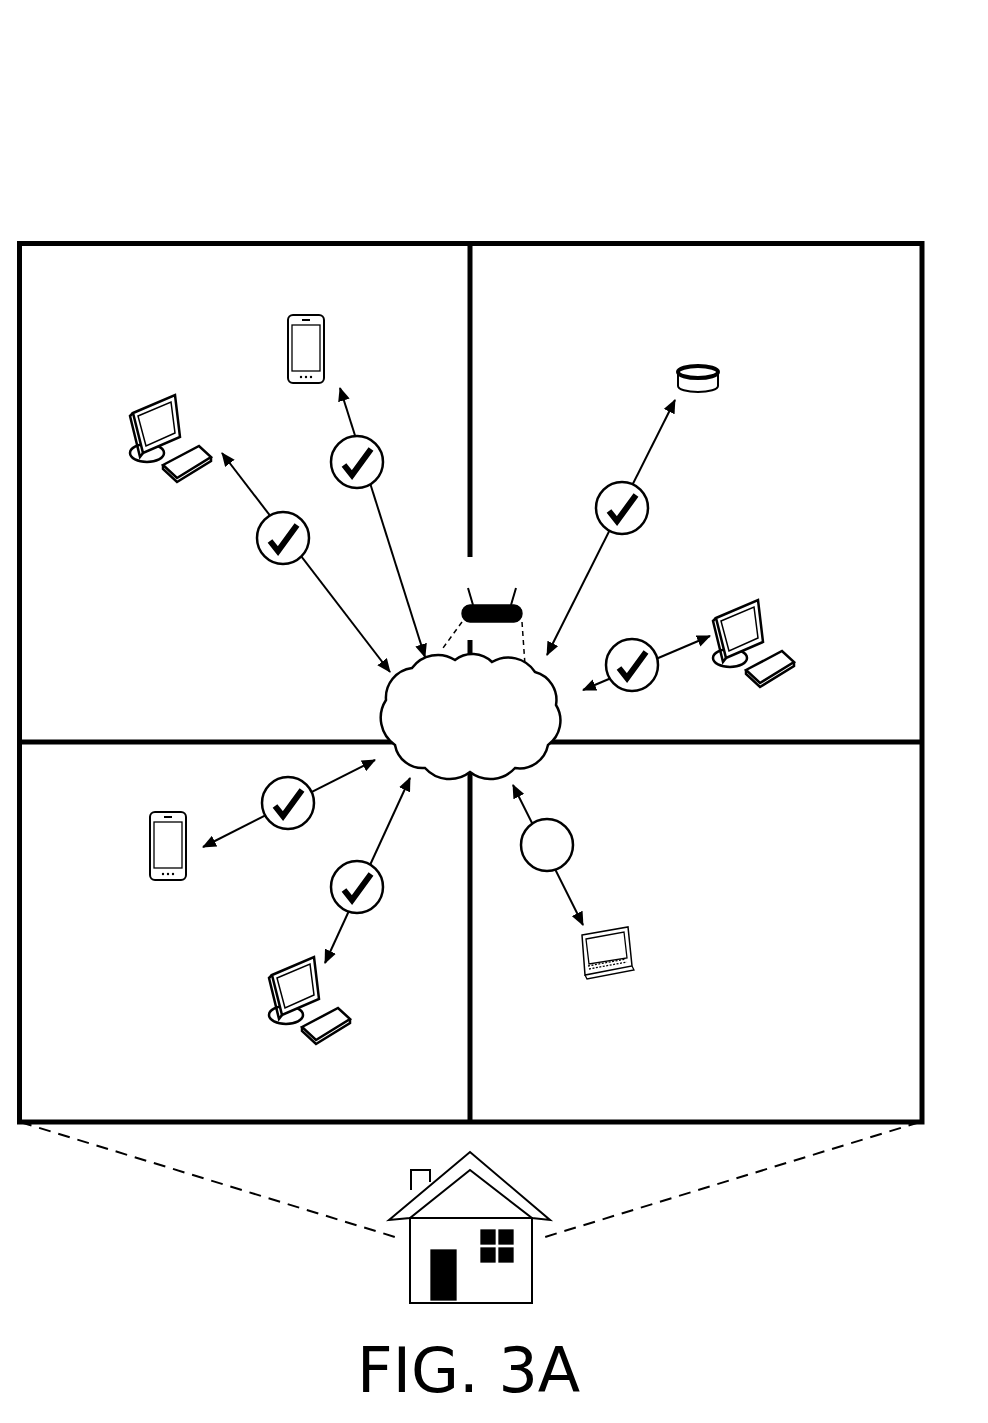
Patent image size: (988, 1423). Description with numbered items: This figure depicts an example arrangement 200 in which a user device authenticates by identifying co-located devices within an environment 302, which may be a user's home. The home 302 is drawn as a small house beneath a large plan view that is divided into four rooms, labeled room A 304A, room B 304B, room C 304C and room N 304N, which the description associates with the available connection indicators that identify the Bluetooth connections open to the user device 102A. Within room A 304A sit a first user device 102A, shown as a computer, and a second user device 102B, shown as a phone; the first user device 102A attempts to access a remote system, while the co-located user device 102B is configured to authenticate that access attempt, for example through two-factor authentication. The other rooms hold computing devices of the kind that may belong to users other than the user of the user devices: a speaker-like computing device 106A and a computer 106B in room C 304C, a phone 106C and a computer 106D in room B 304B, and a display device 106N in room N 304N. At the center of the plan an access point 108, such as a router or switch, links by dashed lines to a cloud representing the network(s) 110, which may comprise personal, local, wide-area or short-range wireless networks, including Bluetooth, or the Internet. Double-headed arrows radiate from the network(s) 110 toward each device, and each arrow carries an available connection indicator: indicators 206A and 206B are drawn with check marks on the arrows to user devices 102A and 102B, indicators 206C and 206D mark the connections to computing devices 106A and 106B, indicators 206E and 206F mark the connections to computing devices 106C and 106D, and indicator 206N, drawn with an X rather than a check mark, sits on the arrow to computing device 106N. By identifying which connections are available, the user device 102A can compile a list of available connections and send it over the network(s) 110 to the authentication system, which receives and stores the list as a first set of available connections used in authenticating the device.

The system 200 is at (90, 45).
The user device 102A is at (172, 395).
The user device 102B is at (340, 318).
The computing device 106A is at (718, 375).
The computing device 106B is at (758, 602).
The computing device 106C is at (172, 880).
The computing device 106D is at (325, 1038).
The computing device 106N is at (597, 976).
The access point 108 is at (502, 586).
The network(s) 110 is at (471, 716).
The available connection indicator 206A is at (283, 566).
The available connection indicator 206B is at (360, 436).
The available connection indicator 206C is at (632, 542).
The available connection indicator 206D is at (632, 692).
The available connection indicator 206E is at (300, 827).
The available connection indicator 206F is at (366, 913).
The available connection indicator 206N is at (543, 872).
The environment 302 is at (550, 1262).
The available connection indicator 304A is at (245, 493).
The available connection indicator 304B is at (245, 932).
The available connection indicator 304C is at (696, 493).
The available connection indicator 304N is at (696, 932).